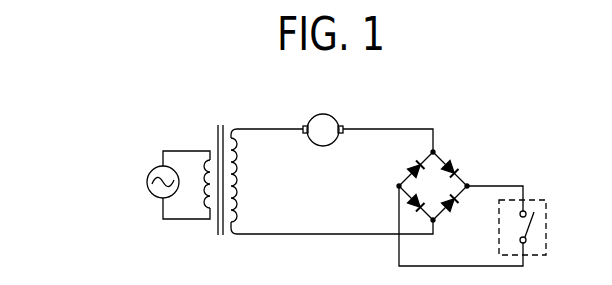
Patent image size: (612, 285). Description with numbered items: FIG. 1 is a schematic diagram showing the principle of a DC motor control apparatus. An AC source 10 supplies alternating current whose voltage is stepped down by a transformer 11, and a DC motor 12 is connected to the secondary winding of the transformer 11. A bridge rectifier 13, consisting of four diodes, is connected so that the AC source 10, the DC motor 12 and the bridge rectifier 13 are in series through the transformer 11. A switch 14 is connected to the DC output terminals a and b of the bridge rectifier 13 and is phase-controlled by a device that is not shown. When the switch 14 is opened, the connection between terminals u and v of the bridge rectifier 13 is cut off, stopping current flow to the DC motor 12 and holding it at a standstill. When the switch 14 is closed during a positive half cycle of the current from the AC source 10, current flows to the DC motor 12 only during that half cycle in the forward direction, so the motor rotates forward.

The AC source 10 is at (151, 172).
The transformer 11 is at (218, 125).
The DC motor 12 is at (323, 113).
The bridge rectifier 13 is at (443, 196).
The switch 14 is at (533, 200).